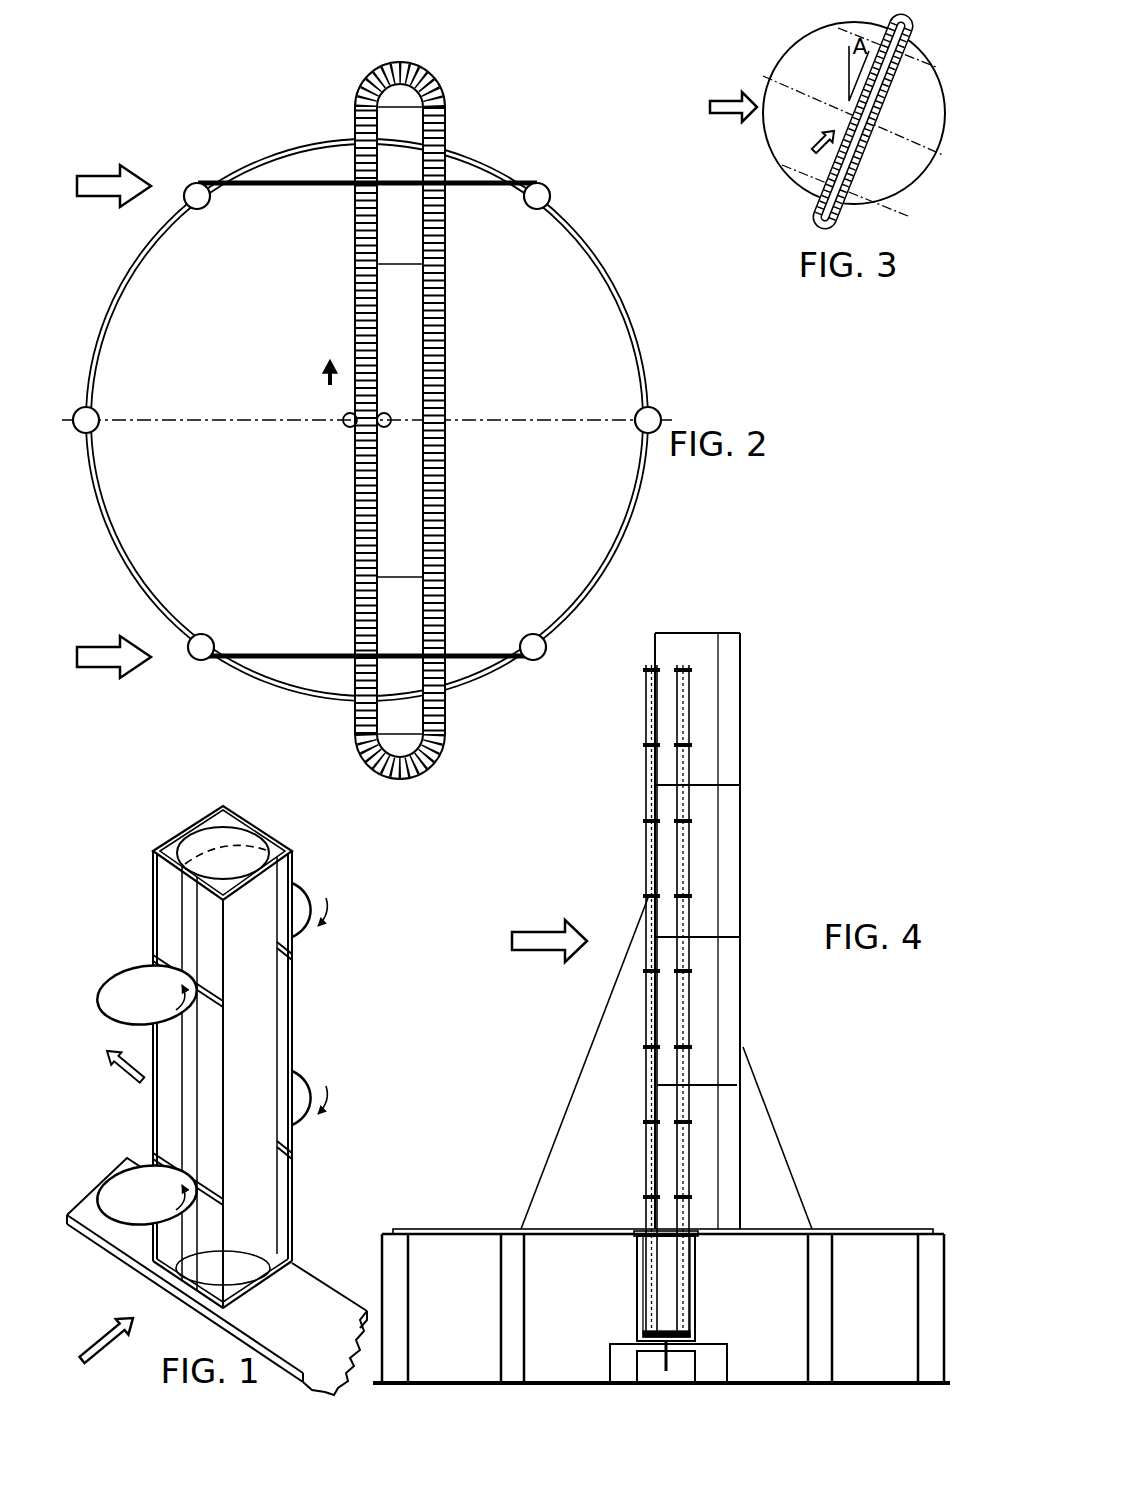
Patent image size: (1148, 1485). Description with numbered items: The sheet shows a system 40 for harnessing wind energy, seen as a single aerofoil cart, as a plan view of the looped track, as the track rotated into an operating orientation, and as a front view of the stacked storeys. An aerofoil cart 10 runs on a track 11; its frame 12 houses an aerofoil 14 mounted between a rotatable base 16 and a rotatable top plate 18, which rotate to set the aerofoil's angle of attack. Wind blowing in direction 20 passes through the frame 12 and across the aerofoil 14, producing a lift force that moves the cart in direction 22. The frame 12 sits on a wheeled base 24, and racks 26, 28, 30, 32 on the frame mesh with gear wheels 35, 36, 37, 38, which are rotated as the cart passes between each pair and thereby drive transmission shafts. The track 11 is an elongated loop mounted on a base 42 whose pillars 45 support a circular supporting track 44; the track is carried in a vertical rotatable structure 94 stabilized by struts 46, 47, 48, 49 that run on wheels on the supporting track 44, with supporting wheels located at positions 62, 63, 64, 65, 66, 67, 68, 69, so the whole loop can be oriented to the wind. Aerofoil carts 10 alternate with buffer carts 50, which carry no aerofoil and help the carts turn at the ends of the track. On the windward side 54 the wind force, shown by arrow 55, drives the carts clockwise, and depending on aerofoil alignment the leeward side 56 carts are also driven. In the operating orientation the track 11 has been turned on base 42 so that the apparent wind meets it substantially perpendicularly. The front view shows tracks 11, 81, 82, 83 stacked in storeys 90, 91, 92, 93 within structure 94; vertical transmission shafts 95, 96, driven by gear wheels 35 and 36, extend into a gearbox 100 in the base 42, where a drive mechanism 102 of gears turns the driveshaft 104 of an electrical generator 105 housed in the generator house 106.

In FIG. 2, the aerofoil cart 10 is at (386, 76).
In FIG. 1, the aerofoil cart 10 is at (170, 846).
In FIG. 2, the track 11 is at (360, 84).
In FIG. 3, the track 11 is at (806, 204).
In FIG. 1, the track 11 is at (137, 1267).
In FIG. 4, the track 11 is at (728, 1229).
In FIG. 1, the frame 12 is at (293, 1021).
In FIG. 1, the aerofoil 14 is at (180, 906).
In FIG. 1, the rotatable base 16 is at (203, 1306).
In FIG. 1, the rotatable top plate 18 is at (230, 828).
In FIG. 2, the wind direction 20 is at (136, 182).
In FIG. 3, the wind direction 20 is at (727, 88).
In FIG. 1, the wind direction 20 is at (93, 1341).
In FIG. 4, the wind direction 20 is at (545, 931).
In FIG. 1, the direction of lift force and cart movement 22 is at (120, 1075).
In FIG. 1, the base 24 is at (293, 1277).
In FIG. 1, the rack 26 is at (160, 959).
In FIG. 1, the rack 28 is at (297, 958).
In FIG. 1, the rack 30 is at (153, 1158).
In FIG. 1, the rack 32 is at (293, 1154).
In FIG. 2, the gear wheel 35 is at (346, 429).
In FIG. 1, the gear wheel 35 is at (102, 1016).
In FIG. 4, the gear wheel 35 is at (645, 1125).
In FIG. 2, the gear wheel 36 is at (388, 430).
In FIG. 1, the gear wheel 36 is at (330, 889).
In FIG. 4, the gear wheel 36 is at (690, 1126).
In FIG. 1, the gear wheel 37 is at (107, 1219).
In FIG. 1, the gear wheel 38 is at (320, 1084).
In FIG. 2, the system for harnessing wind energy 40 is at (160, 112).
In FIG. 4, the system for harnessing wind energy 40 is at (851, 692).
In FIG. 2, the base 42 is at (641, 366).
In FIG. 3, the base 42 is at (799, 73).
In FIG. 4, the base 42 is at (870, 1232).
In FIG. 2, the circular supporting track 44 is at (628, 307).
In FIG. 2, the pillars 45 is at (204, 210).
In FIG. 4, the pillars 45 is at (501, 1325).
In FIG. 2, the strut 46 is at (480, 191).
In FIG. 4, the strut 46 is at (815, 1138).
In FIG. 2, the strut 47 is at (278, 191).
In FIG. 4, the strut 47 is at (562, 1063).
In FIG. 2, the strut 48 is at (290, 656).
In FIG. 4, the strut 48 is at (571, 1099).
In FIG. 2, the strut 49 is at (485, 656).
In FIG. 4, the strut 49 is at (790, 1172).
In FIG. 2, the buffer cart 50 is at (408, 66).
In FIG. 2, the windward side 54 is at (352, 346).
In FIG. 2, the direction of force arrow 55 is at (318, 378).
In FIG. 3, the direction of force arrow 55 is at (805, 126).
In FIG. 2, the leeward side 56 is at (447, 351).
In FIG. 2, the supporting wheel position 62 is at (206, 183).
In FIG. 2, the supporting wheel position 63 is at (353, 152).
In FIG. 2, the supporting wheel position 64 is at (448, 152).
In FIG. 2, the supporting wheel position 65 is at (533, 182).
In FIG. 2, the supporting wheel position 66 is at (206, 660).
In FIG. 2, the supporting wheel position 67 is at (352, 701).
In FIG. 2, the supporting wheel position 68 is at (448, 697).
In FIG. 2, the supporting wheel position 69 is at (532, 662).
In FIG. 4, the track 81 is at (728, 1085).
In FIG. 4, the track 82 is at (728, 937).
In FIG. 4, the track 83 is at (730, 785).
In FIG. 4, the storey 90 is at (745, 1146).
In FIG. 4, the storey 91 is at (745, 1000).
In FIG. 4, the storey 92 is at (742, 858).
In FIG. 4, the storey 93 is at (742, 706).
In FIG. 4, the rotatable structure 94 is at (700, 633).
In FIG. 4, the vertical transmission shaft 95 is at (647, 863).
In FIG. 4, the vertical transmission shaft 96 is at (684, 849).
In FIG. 4, the gearbox 100 is at (697, 1314).
In FIG. 4, the drive mechanism 102 is at (697, 1342).
In FIG. 4, the driveshaft 104 is at (664, 1365).
In FIG. 4, the electrical generator 105 is at (697, 1372).
In FIG. 4, the generator house 106 is at (728, 1354).